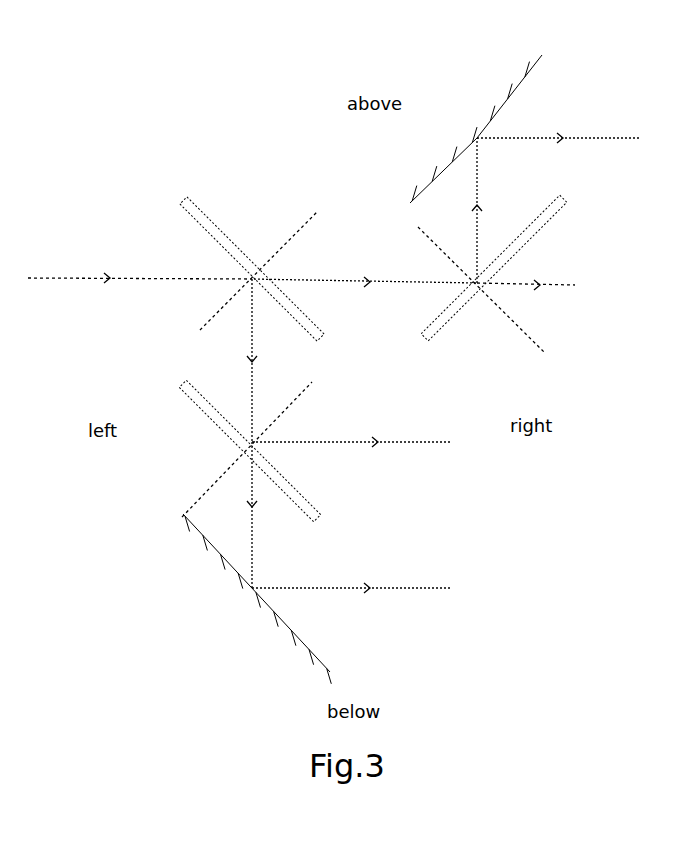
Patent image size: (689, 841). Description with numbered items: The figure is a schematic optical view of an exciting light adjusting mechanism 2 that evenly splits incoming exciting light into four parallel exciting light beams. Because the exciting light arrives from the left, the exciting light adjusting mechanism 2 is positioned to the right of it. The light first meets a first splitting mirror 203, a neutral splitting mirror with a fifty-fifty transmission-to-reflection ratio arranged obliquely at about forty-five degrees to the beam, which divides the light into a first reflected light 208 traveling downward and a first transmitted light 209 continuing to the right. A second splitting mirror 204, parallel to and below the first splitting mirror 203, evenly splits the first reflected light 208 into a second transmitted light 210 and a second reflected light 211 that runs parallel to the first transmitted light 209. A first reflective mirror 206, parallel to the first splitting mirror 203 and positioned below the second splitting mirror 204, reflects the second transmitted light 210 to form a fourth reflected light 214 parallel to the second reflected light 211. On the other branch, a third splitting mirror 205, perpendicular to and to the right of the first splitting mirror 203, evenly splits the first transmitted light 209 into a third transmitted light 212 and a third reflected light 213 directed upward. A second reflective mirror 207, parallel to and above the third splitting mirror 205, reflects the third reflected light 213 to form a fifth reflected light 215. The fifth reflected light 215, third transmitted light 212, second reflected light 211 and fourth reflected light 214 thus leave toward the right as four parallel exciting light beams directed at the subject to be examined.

The exciting light adjusting mechanism 2 is at (330, 110).
The first splitting mirror 203 is at (218, 224).
The second splitting mirror 204 is at (198, 383).
The third splitting mirror 205 is at (565, 198).
The first reflective mirror 206 is at (330, 673).
The second reflective mirror 207 is at (542, 56).
The first reflected light 208 is at (256, 330).
The first transmitted light 209 is at (322, 282).
The second transmitted light 210 is at (258, 530).
The second reflected light 211 is at (437, 442).
The third transmitted light 212 is at (562, 285).
The third reflected light 213 is at (482, 186).
The fourth reflected light 214 is at (390, 588).
The fifth reflected light 215 is at (582, 138).